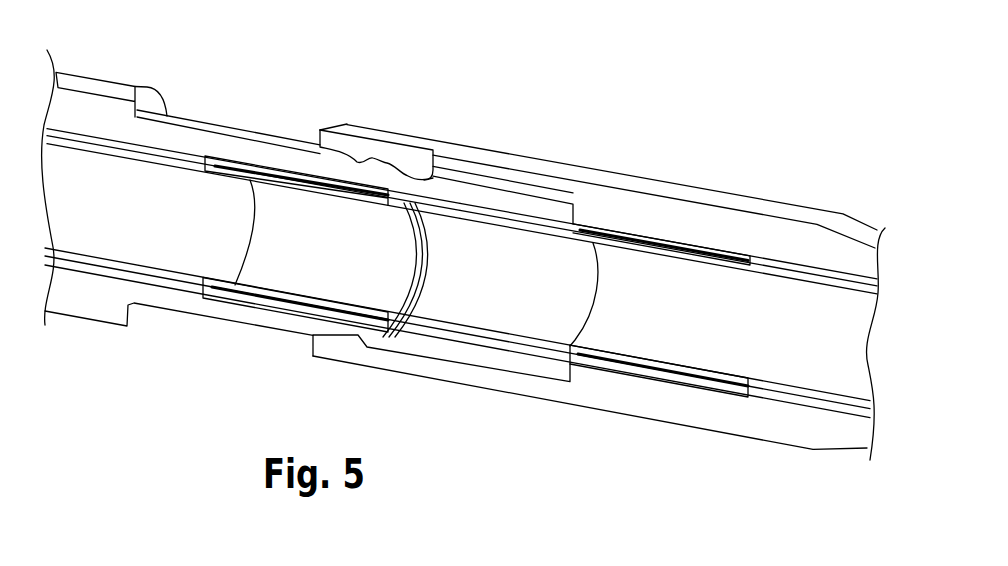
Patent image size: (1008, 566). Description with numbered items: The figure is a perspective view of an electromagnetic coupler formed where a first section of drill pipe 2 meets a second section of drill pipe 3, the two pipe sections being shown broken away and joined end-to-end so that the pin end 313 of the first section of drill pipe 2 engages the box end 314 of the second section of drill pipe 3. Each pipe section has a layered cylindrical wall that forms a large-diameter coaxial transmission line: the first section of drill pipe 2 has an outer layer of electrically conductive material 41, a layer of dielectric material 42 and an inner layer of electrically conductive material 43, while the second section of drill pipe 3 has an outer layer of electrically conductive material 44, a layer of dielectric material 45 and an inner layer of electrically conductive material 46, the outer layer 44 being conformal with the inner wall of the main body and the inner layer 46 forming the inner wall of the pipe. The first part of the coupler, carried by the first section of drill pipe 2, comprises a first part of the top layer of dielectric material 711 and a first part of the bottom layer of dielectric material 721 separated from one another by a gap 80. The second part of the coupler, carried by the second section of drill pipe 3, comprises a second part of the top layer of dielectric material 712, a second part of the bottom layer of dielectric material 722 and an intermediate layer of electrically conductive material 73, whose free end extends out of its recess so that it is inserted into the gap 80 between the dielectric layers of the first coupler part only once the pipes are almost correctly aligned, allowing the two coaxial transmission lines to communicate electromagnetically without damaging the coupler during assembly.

The first section of drill pipe 2 is at (235, 193).
The second section of drill pipe 3 is at (727, 344).
The outer layer of electrically conductive material 41 is at (86, 131).
The layer of dielectric material 42 is at (48, 130).
The inner layer of electrically conductive material 43 is at (82, 157).
The outer layer of electrically conductive material 44 is at (815, 268).
The layer of dielectric material 45 is at (878, 285).
The inner layer of electrically conductive material 46 is at (838, 291).
The pin end 313 is at (170, 140).
The box end 314 is at (624, 213).
The first part of the top layer of dielectric material 711 is at (233, 167).
The second part of the top layer of dielectric material 712 is at (695, 248).
The first part of the bottom layer of dielectric material 721 is at (235, 285).
The second part of the bottom layer of dielectric material 722 is at (643, 250).
The intermediate layer of electrically conductive material 73 is at (507, 221).
The gap 80 is at (434, 178).